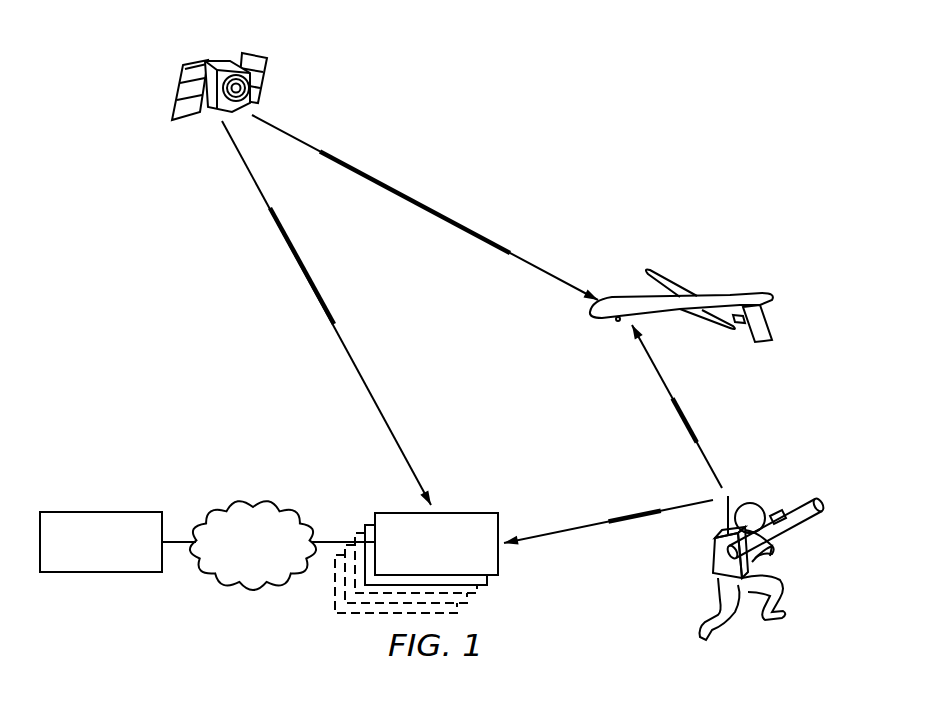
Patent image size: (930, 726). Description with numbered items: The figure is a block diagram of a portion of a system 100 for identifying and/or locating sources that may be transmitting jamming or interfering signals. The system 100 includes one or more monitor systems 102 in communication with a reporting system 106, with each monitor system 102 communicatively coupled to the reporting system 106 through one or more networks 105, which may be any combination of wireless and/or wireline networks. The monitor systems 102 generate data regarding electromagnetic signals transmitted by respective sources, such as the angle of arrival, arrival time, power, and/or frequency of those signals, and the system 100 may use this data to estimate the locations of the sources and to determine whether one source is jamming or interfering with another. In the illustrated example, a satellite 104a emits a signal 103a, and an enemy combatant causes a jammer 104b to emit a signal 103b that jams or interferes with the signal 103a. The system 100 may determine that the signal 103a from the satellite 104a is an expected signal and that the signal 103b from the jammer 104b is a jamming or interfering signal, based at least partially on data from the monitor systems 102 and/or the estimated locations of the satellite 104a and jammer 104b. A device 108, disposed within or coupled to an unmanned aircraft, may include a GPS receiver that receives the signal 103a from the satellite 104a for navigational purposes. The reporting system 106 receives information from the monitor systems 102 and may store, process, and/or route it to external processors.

The system 100 is at (636, 68).
The monitor system 102 is at (455, 513).
The signal 103a is at (268, 212).
The signal 103b is at (699, 440).
The satellite 104a is at (224, 64).
The jammer 104b is at (713, 553).
The network 105 is at (253, 506).
The reporting system 106 is at (100, 512).
The device 108 is at (695, 296).